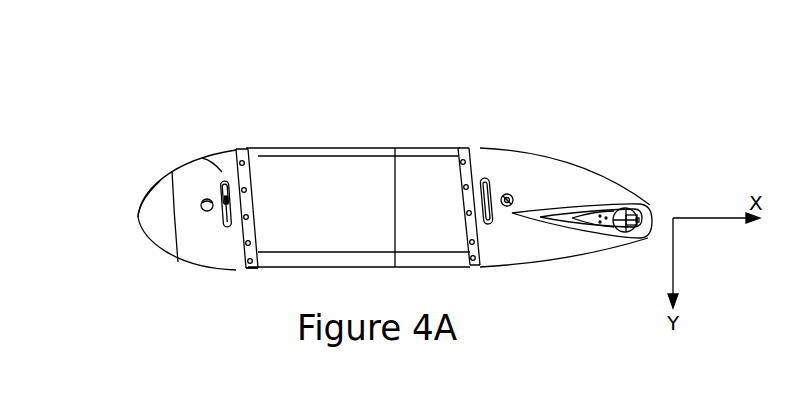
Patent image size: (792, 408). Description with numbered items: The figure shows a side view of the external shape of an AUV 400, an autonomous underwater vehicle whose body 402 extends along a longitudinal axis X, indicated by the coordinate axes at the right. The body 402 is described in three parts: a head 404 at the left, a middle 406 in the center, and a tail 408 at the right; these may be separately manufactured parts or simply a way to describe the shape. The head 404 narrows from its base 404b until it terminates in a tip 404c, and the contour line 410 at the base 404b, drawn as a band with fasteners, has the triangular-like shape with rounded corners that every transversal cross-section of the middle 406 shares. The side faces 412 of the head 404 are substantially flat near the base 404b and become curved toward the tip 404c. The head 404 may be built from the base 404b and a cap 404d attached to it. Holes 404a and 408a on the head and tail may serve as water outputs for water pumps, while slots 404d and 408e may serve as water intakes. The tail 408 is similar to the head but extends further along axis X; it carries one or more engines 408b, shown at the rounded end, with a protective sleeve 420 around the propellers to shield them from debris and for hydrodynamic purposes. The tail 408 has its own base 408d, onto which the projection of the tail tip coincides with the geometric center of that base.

The AUV 400 is at (360, 99).
The body 402 is at (424, 126).
The head 404 is at (197, 165).
The holes 404a is at (203, 210).
The base 404b is at (247, 268).
The tip 404c is at (140, 218).
The cap 404d is at (219, 195).
The middle 406 is at (368, 211).
The tail 408 is at (553, 175).
The holes 408a is at (509, 195).
The engines 408b is at (607, 221).
The base 408d is at (473, 262).
The slots 408e is at (487, 176).
The contour line 410 is at (250, 192).
The side faces 412 is at (212, 168).
The protective sleeve 420 is at (647, 205).